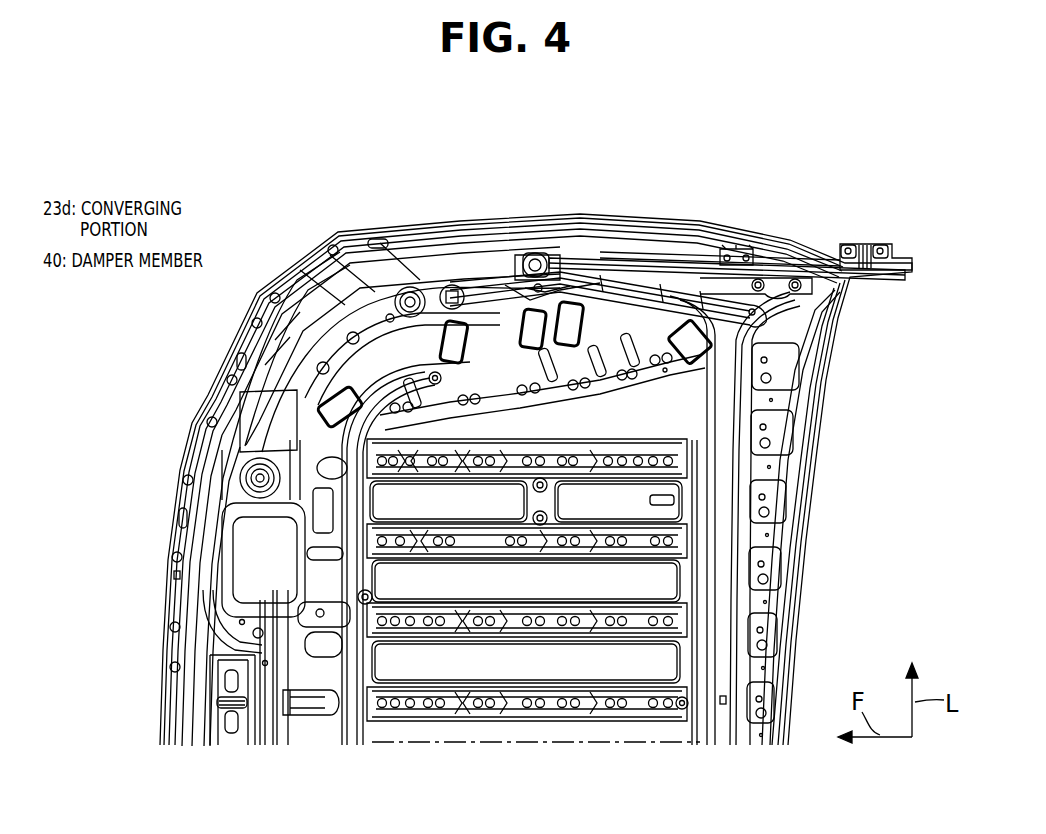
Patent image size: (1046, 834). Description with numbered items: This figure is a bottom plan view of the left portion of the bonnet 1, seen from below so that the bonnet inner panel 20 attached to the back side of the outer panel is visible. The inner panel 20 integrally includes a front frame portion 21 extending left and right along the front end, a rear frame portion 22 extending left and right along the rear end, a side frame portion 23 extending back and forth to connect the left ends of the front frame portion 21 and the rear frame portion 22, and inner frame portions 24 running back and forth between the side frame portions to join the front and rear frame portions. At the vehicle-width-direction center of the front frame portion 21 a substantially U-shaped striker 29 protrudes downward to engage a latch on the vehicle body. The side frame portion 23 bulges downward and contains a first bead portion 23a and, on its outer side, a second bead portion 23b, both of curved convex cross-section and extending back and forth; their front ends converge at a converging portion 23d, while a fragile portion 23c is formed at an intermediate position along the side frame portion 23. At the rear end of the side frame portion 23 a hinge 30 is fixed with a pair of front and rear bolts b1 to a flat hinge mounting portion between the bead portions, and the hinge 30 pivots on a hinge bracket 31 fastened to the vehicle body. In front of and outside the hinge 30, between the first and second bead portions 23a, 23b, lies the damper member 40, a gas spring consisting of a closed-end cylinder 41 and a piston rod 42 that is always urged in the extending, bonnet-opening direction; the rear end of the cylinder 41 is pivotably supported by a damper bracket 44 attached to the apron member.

The bonnet 1 is at (233, 300).
The bonnet inner panel 20 is at (288, 257).
The front frame portion 21 is at (210, 580).
The rear frame portion 22 is at (752, 666).
The side frame portion 23 is at (405, 262).
The first bead portion 23a is at (670, 293).
The second bead portion 23b is at (700, 252).
The fragile portion 23c is at (500, 292).
The converging portion 23d is at (512, 302).
The inner frame portions 24 is at (454, 462).
The striker 29 is at (228, 702).
The hinge 30 is at (830, 293).
The hinge bracket 31 is at (893, 244).
The damper member 40 is at (600, 130).
The cylinder 41 is at (590, 258).
The piston rod 42 is at (545, 258).
The damper bracket 44 is at (737, 258).
The bolts b1 is at (760, 282).